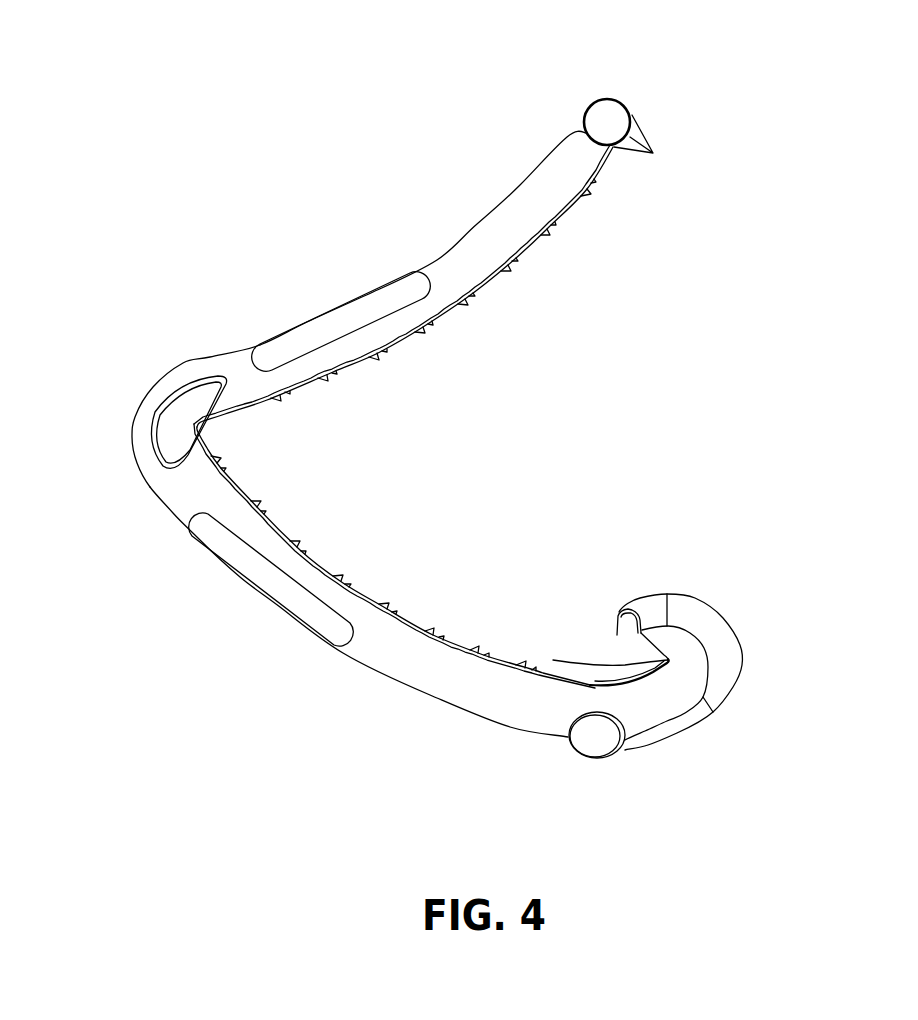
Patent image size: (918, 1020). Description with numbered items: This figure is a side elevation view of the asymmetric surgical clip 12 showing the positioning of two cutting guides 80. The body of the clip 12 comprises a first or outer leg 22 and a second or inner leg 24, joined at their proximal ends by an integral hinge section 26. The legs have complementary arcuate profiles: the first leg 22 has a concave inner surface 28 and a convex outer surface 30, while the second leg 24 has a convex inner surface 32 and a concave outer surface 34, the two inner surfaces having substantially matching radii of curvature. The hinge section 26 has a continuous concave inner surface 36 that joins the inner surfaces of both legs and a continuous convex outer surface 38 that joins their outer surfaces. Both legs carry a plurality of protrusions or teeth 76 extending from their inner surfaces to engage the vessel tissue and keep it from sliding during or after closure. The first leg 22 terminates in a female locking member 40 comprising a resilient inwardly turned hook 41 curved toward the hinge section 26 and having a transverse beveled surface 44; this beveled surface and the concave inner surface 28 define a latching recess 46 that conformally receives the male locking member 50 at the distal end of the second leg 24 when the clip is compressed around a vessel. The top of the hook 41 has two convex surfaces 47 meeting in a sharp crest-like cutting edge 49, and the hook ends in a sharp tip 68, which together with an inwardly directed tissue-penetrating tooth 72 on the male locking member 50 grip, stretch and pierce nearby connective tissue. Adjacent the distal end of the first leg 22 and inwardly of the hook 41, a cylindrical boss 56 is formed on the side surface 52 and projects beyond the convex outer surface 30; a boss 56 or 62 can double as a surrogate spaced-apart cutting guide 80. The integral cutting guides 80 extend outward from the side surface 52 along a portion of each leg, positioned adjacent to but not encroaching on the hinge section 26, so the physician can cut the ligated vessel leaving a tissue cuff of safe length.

The asymmetric surgical clip 12 is at (200, 142).
The first leg 22 is at (408, 668).
The second leg 24 is at (477, 247).
The hinge section 26 is at (100, 437).
The concave inner surface 28 is at (357, 592).
The convex outer surface 30 is at (347, 653).
The convex inner surface 32 is at (533, 247).
The concave outer surface 34 is at (487, 212).
The continuous concave inner surface 36 is at (199, 429).
The continuous convex outer surface 38 is at (148, 395).
The female locking member 40 is at (742, 730).
The hook 41 is at (660, 570).
The beveled surface 44 is at (648, 638).
The latching recess 46 is at (597, 664).
The convex surfaces 47 is at (692, 617).
The cutting edge 49 is at (631, 602).
The male locking member 50 is at (611, 62).
The side surface 52 is at (440, 291).
The cylindrical boss 56 is at (593, 740).
The boss 62 is at (600, 115).
The sharp tip 68 is at (617, 633).
The tissue-penetrating tooth 72 is at (653, 153).
The teeth 76 is at (557, 227).
The cutting guide 80 is at (320, 333).